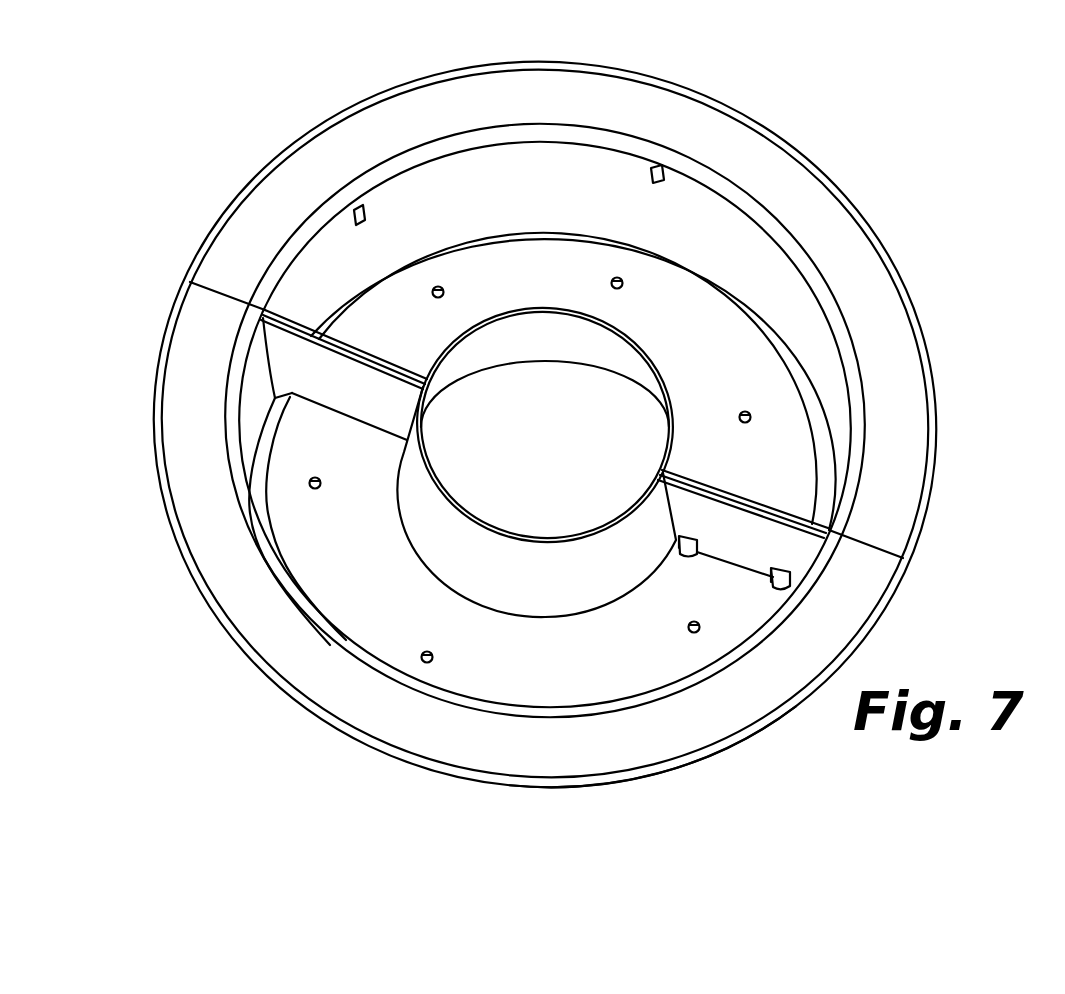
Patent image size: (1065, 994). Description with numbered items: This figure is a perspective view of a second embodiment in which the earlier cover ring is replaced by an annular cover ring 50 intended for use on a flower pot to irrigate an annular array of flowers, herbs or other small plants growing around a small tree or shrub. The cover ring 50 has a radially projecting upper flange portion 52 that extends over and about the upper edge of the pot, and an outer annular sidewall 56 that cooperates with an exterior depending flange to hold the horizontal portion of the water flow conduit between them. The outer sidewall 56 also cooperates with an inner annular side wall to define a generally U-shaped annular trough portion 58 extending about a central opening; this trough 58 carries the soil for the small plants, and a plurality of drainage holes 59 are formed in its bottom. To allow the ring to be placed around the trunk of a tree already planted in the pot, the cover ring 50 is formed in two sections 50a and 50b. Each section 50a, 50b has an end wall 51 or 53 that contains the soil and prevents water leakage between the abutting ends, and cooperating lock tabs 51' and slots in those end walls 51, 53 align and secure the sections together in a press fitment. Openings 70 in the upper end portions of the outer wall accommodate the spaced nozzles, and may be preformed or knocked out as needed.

The cover ring 50 is at (852, 166).
The cover ring section 50a is at (917, 309).
The cover ring section 50b is at (743, 738).
The end wall 51 is at (582, 434).
The lock tab 51' is at (722, 566).
The upper flange portion 52 is at (787, 170).
The end wall 53 is at (352, 397).
The outer annular sidewall 56 is at (440, 181).
The U-shaped annular trough portion 58 is at (553, 267).
The drainage holes 59 is at (442, 287).
The openings 70 is at (360, 220).